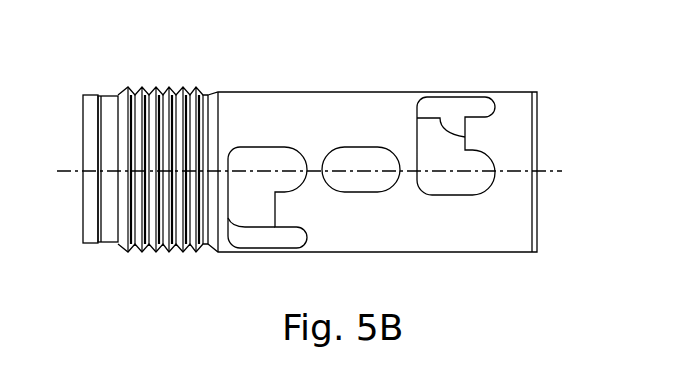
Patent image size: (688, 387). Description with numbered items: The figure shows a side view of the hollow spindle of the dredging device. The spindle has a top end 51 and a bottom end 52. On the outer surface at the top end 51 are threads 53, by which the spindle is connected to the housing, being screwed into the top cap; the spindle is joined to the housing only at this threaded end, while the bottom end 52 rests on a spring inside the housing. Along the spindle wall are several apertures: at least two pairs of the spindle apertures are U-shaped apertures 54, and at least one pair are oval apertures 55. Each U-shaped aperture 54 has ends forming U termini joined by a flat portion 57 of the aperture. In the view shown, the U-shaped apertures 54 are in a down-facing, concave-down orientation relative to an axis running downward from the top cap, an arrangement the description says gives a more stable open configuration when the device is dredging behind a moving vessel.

The top end 51 is at (64, 171).
The bottom end 52 is at (540, 243).
The threads 53 is at (142, 252).
The U-shaped spindle apertures 54 is at (267, 243).
The oval spindle apertures 55 is at (372, 158).
The flat portion of the apertures 57 is at (447, 127).